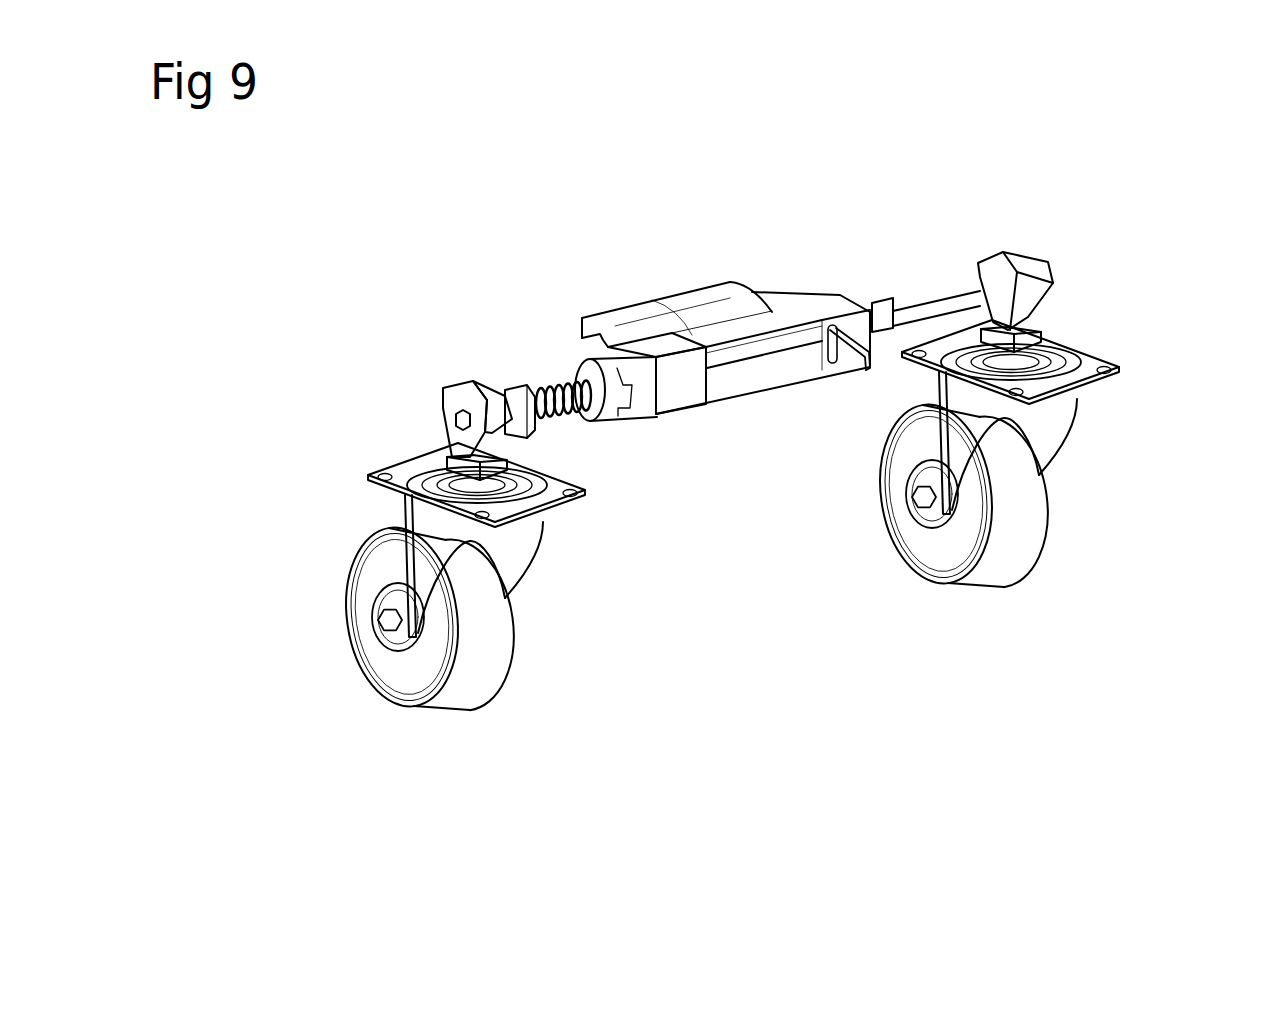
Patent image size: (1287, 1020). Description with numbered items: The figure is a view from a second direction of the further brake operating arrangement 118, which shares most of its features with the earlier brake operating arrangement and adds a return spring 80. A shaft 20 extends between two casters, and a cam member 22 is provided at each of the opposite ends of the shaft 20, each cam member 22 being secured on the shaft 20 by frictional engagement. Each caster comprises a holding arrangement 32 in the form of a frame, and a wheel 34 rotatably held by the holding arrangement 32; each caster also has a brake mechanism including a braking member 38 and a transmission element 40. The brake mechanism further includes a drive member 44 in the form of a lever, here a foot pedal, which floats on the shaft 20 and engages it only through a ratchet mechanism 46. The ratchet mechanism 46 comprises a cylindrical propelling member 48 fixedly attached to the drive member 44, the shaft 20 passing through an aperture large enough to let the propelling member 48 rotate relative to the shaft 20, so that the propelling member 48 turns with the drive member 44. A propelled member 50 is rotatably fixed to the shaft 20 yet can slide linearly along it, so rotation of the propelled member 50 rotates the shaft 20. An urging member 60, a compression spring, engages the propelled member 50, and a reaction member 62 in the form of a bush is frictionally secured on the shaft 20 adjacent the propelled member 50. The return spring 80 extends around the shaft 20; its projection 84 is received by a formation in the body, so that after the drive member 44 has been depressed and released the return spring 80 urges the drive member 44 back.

The shaft 20 is at (937, 297).
The cam member 22 is at (450, 407).
The holding arrangement 32 is at (525, 568).
The wheel 34 is at (477, 653).
The braking member 38 is at (480, 552).
The transmission element 40 is at (427, 457).
The drive member 44 is at (697, 295).
The ratchet mechanism 46 is at (650, 434).
The propelling member 48 is at (648, 380).
The propelled member 50 is at (597, 363).
The urging member 60 is at (545, 388).
The reaction member 62 is at (523, 407).
The return spring 80 is at (845, 338).
The projection 84 is at (870, 368).
The further brake operating arrangement 118 is at (686, 338).